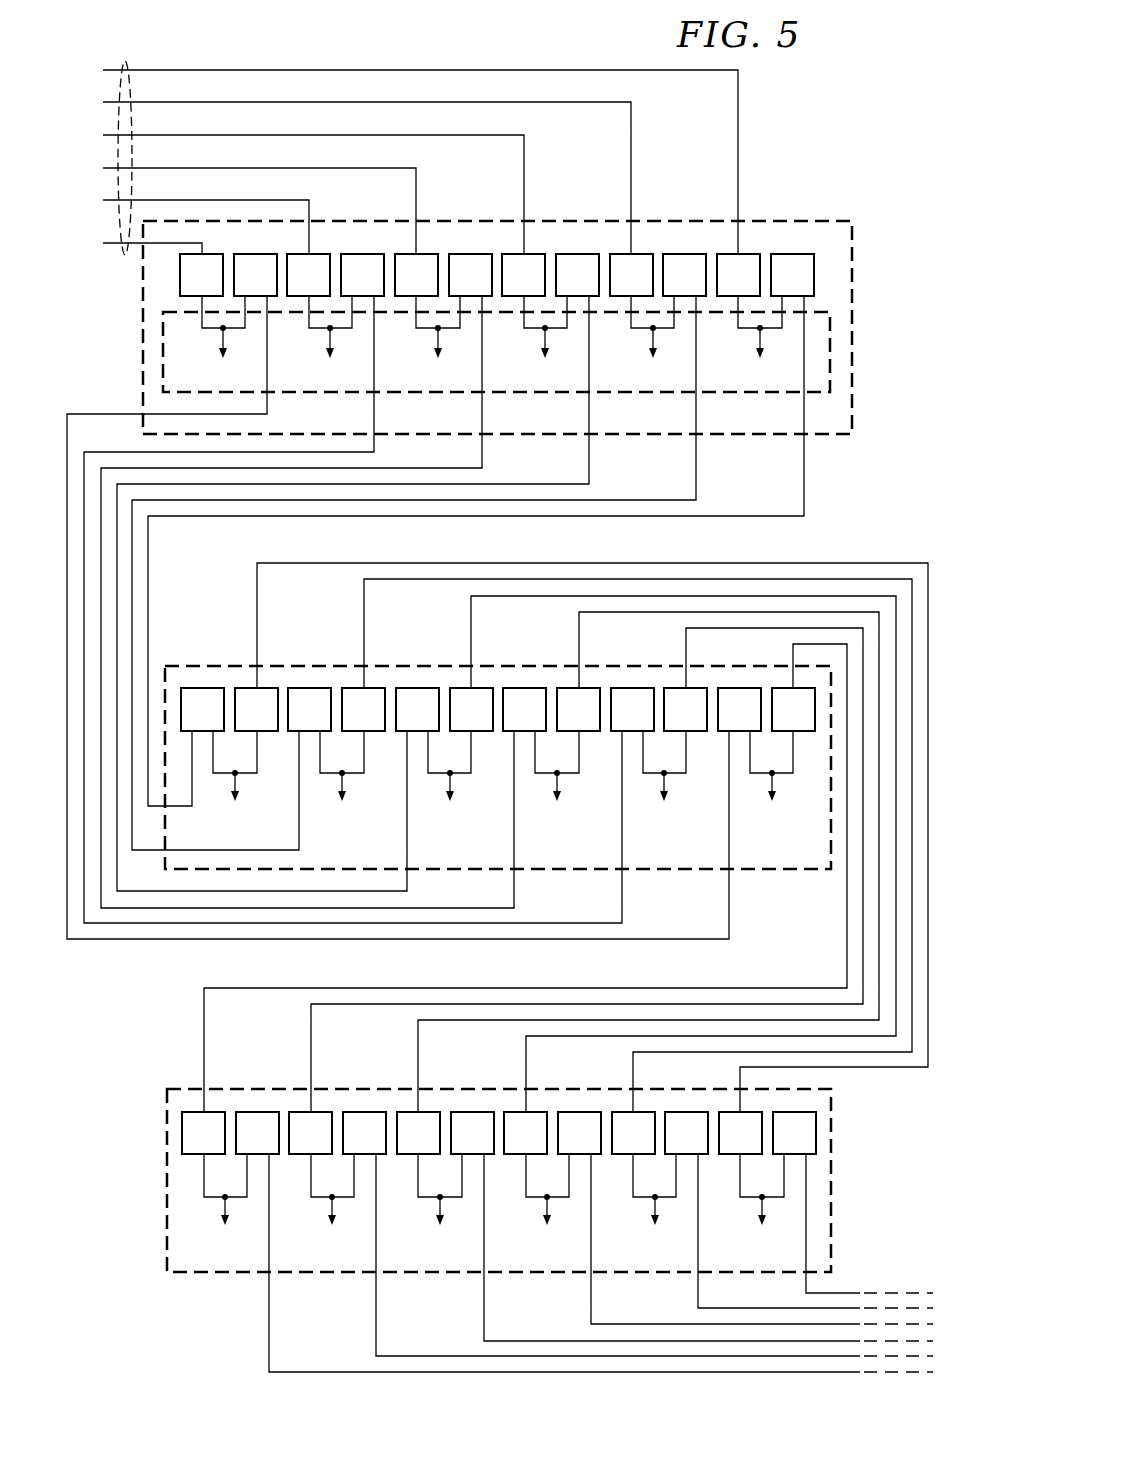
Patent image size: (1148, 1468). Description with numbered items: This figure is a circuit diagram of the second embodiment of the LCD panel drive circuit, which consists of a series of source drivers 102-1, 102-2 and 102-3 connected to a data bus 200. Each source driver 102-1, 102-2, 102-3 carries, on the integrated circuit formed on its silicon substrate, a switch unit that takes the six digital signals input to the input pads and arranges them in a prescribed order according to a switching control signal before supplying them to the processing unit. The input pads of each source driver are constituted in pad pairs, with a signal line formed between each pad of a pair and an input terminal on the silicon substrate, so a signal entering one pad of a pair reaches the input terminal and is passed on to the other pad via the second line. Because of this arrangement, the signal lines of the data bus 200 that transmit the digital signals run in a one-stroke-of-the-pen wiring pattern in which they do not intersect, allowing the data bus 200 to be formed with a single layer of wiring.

The data bus 200 is at (125, 62).
The source driver 102-1 is at (852, 309).
The source driver 102-2 is at (768, 869).
The source driver 102-3 is at (167, 1191).